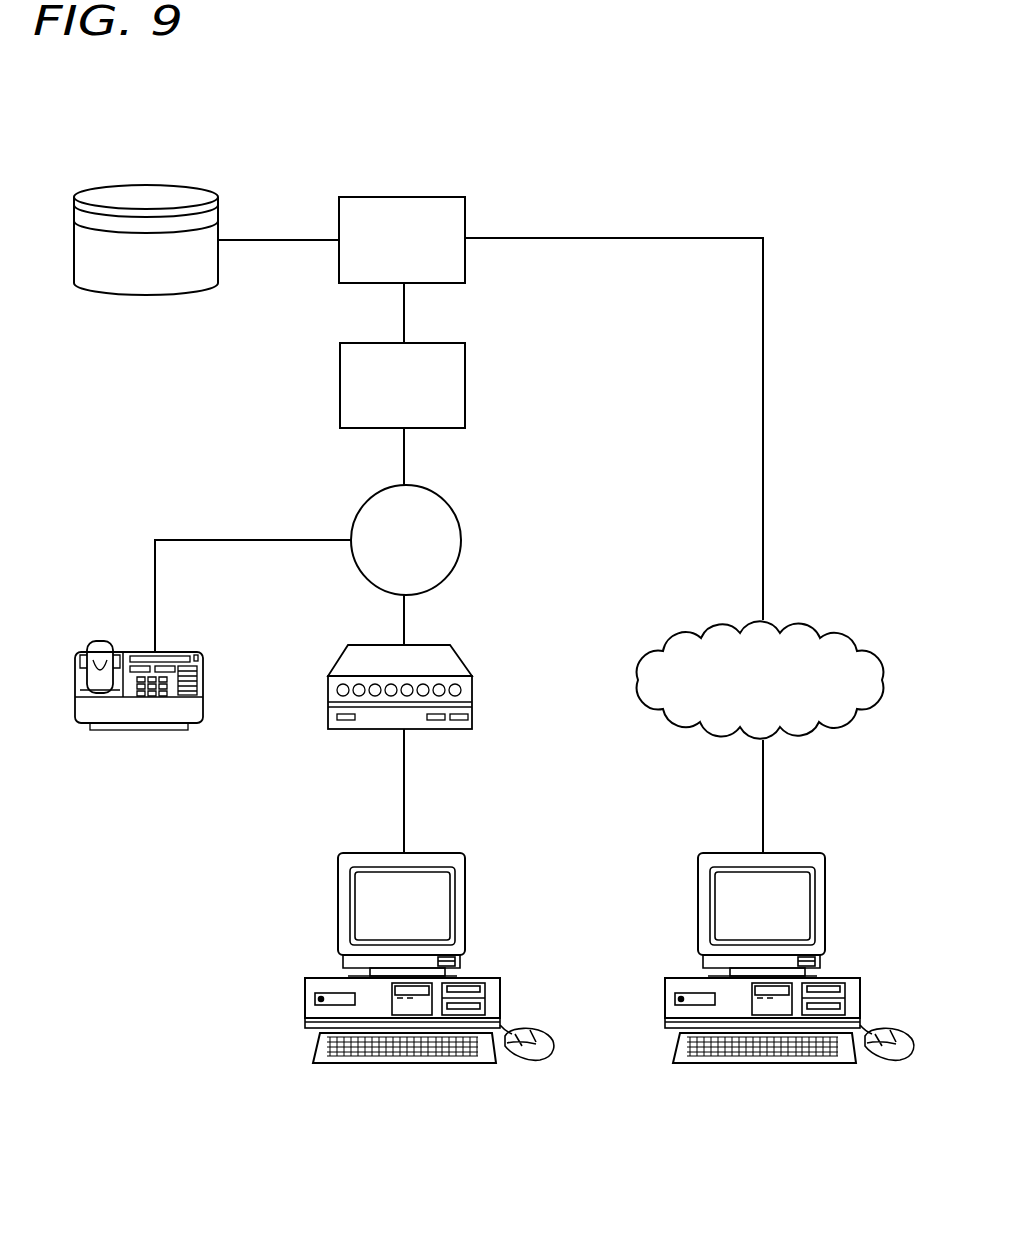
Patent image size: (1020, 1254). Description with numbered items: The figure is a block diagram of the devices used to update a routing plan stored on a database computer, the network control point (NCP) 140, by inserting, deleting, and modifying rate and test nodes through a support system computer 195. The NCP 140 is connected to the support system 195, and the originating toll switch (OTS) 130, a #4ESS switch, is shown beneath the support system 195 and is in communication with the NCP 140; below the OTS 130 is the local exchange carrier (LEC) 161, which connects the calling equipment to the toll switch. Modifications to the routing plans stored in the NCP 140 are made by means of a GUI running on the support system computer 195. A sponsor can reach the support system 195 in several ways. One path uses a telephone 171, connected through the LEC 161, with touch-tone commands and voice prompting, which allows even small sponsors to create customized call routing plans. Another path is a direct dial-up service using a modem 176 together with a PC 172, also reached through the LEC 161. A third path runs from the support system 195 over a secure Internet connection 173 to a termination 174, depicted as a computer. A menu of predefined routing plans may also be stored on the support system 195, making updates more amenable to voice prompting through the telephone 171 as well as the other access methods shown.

The network control point (NCP) 140 is at (157, 190).
The support system computer 195 is at (401, 197).
The originating toll switch (OTS) 130 is at (460, 383).
The local exchange carrier (LEC) 161 is at (461, 530).
The telephone 171 is at (137, 728).
The modem 176 is at (472, 676).
The PC 172 is at (342, 870).
The secure Internet connection 173 is at (688, 633).
The termination 174 is at (701, 862).